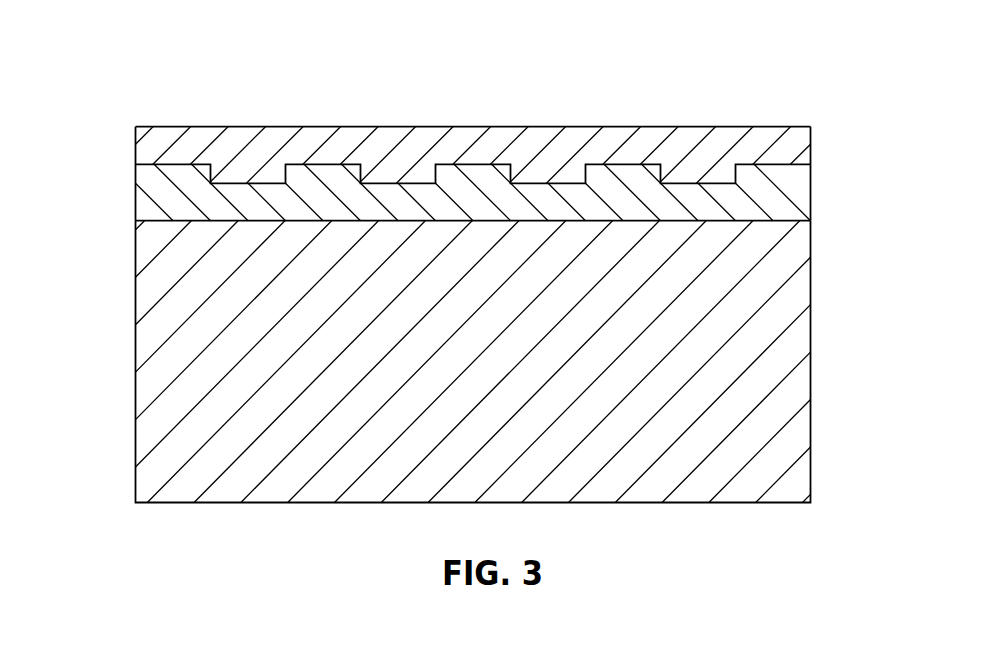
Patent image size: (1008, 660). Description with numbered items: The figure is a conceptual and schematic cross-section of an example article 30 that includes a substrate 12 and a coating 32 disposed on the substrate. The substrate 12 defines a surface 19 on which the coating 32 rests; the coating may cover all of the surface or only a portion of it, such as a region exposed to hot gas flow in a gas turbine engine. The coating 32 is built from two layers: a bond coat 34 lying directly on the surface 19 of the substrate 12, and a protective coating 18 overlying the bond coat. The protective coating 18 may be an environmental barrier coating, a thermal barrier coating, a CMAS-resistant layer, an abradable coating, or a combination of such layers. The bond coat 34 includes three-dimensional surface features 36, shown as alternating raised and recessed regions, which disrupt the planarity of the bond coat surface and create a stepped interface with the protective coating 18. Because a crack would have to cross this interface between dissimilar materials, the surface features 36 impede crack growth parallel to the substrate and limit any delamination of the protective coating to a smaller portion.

The article 30 is at (190, 44).
The substrate 12 is at (135, 353).
The protective coating 18 is at (135, 145).
The bond coat 34 is at (135, 200).
The three-dimensional surface features 36 is at (623, 167).
The coating 32 is at (827, 128).
The surface 19 is at (530, 220).